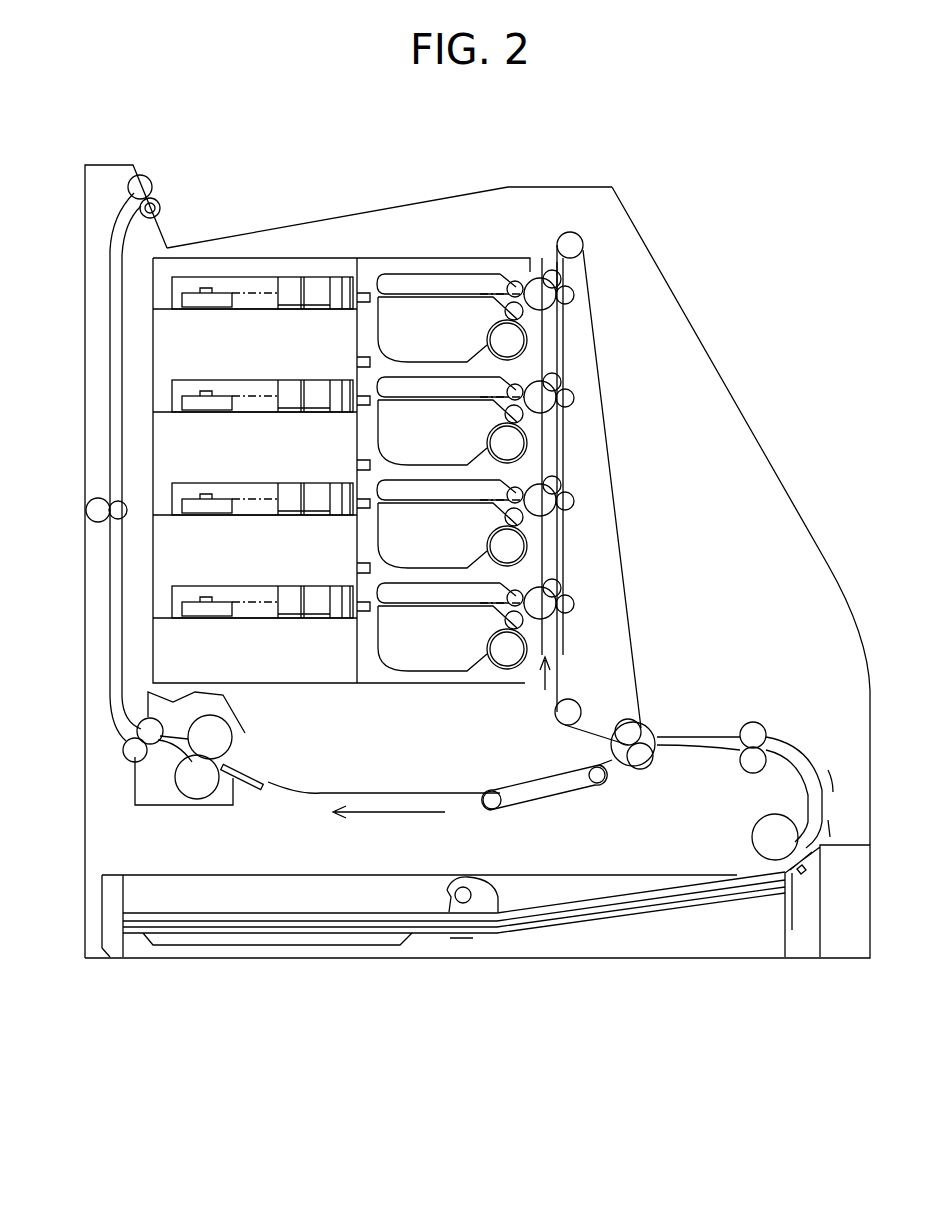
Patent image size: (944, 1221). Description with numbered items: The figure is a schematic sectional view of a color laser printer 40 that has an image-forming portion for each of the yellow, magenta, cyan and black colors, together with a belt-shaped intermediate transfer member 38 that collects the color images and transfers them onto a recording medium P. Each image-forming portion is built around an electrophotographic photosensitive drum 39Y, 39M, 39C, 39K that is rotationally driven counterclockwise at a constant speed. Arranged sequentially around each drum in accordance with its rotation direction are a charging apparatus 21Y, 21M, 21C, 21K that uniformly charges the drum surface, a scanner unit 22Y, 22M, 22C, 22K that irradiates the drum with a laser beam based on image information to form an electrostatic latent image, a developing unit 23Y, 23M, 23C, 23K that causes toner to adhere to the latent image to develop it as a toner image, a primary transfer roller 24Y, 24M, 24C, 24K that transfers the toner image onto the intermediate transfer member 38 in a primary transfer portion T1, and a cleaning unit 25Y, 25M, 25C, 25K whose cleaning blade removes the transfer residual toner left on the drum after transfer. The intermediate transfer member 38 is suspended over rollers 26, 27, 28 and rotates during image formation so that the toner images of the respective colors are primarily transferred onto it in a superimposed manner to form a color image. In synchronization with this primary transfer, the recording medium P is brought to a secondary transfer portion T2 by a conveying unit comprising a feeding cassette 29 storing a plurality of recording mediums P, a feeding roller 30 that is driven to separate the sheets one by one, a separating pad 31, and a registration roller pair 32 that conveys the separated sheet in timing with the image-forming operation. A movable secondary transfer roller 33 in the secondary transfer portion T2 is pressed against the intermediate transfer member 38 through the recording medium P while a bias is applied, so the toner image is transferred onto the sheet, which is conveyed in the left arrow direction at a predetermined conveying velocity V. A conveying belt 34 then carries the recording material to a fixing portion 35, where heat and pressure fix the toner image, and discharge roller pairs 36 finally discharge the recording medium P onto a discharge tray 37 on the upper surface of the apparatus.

The charging apparatus 21K is at (522, 280).
The charging apparatus 21C is at (542, 379).
The charging apparatus 21M is at (542, 482).
The charging apparatus 21Y is at (542, 585).
The scanner unit 22K is at (172, 298).
The scanner unit 22C is at (172, 401).
The scanner unit 22M is at (172, 504).
The scanner unit 22Y is at (172, 607).
The developing unit 23K is at (378, 336).
The developing unit 23C is at (378, 439).
The developing unit 23M is at (378, 542).
The developing unit 23Y is at (378, 645).
The primary transfer roller 24K is at (575, 297).
The primary transfer roller 24C is at (575, 400).
The primary transfer roller 24M is at (575, 503).
The primary transfer roller 24Y is at (575, 606).
The cleaning unit 25K is at (410, 274).
The cleaning unit 25C is at (357, 356).
The cleaning unit 25M is at (357, 459).
The cleaning unit 25Y is at (357, 562).
The roller 26 is at (570, 231).
The roller 27 is at (624, 720).
The roller 28 is at (555, 712).
The feeding cassette 29 is at (642, 958).
The feeding roller 30 is at (752, 830).
The separating pad 31 is at (806, 876).
The registration roller pair 32 is at (750, 722).
The secondary transfer roller 33 is at (646, 768).
The conveying belt 34 is at (500, 788).
The fixing portion 35 is at (180, 805).
The discharge roller pair 36 is at (160, 200).
The discharge tray 37 is at (372, 212).
The intermediate transfer member 38 is at (560, 663).
The photosensitive drum 39K is at (562, 280).
The photosensitive drum 39C is at (562, 384).
The photosensitive drum 39M is at (562, 487).
The photosensitive drum 39Y is at (562, 590).
The color laser printer 40 is at (510, 1010).
The primary transfer portion T1 is at (543, 270).
The secondary transfer portion T2 is at (650, 722).
The recording medium P is at (420, 934).
The conveying velocity V is at (389, 825).